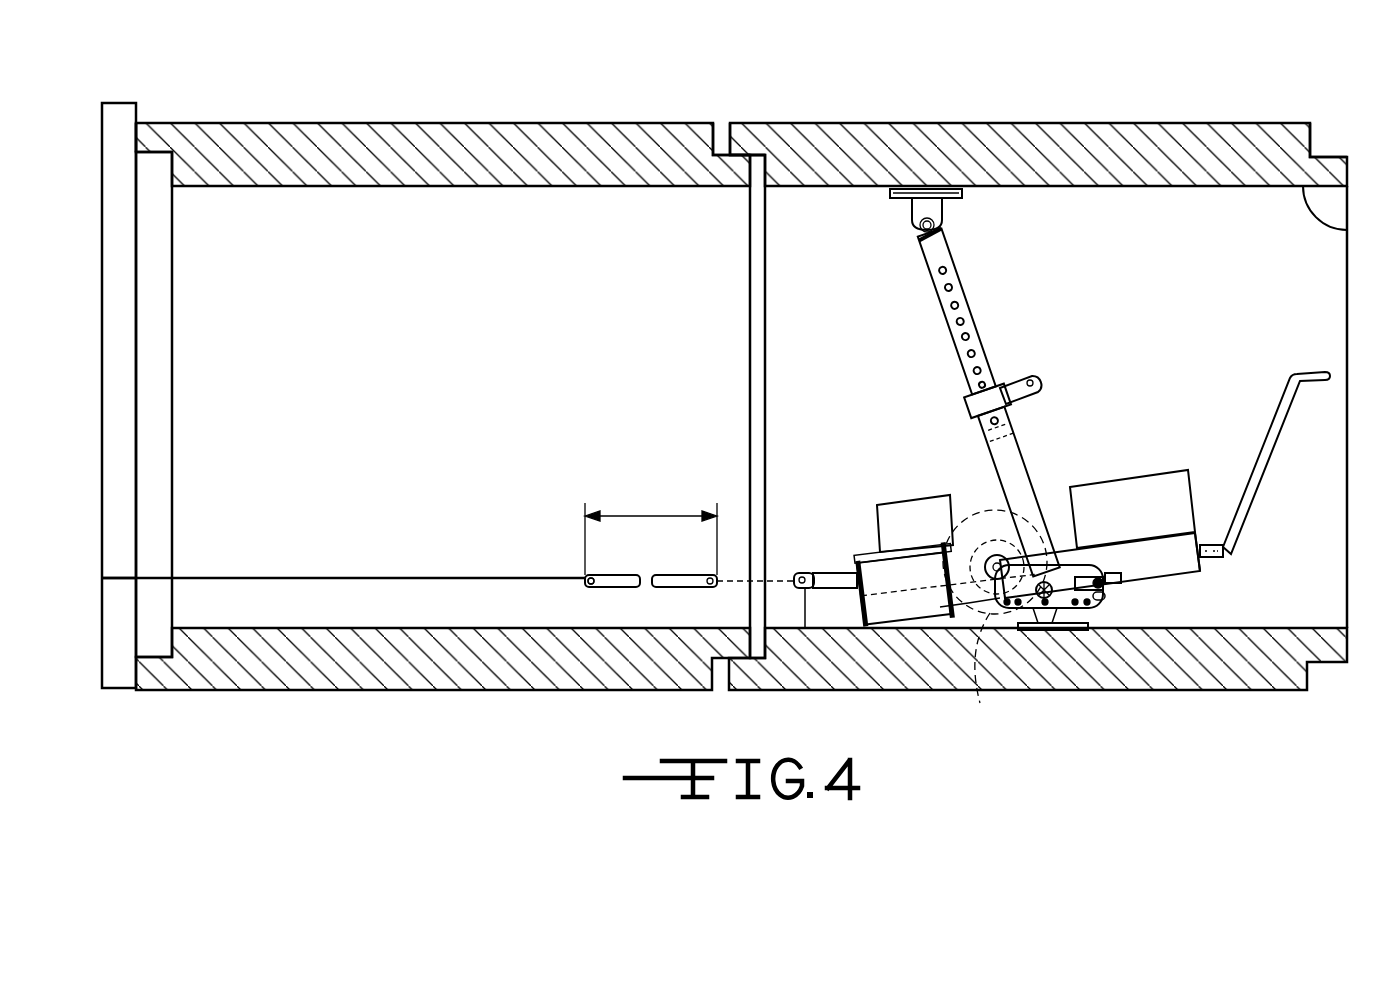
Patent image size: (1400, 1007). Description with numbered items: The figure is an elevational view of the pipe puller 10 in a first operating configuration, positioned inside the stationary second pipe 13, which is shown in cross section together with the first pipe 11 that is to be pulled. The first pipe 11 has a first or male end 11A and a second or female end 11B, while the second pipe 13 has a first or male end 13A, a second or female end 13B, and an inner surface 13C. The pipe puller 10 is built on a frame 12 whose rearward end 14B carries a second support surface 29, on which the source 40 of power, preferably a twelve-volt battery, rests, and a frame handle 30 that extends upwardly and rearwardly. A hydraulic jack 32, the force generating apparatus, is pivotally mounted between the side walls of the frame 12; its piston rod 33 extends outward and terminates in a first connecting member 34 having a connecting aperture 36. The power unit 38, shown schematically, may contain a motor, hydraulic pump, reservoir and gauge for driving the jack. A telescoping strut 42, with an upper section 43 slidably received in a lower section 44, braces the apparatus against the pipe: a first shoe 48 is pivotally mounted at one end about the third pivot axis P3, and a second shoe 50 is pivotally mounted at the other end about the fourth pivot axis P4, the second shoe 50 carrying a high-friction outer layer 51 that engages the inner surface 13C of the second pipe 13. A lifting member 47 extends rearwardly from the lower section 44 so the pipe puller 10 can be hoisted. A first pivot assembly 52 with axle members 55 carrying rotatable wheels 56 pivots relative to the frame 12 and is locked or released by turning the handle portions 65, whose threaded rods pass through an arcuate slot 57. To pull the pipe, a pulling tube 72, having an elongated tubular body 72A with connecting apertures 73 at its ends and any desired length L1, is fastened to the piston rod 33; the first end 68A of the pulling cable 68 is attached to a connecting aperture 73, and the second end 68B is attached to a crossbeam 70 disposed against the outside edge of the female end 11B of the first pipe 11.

The pipe puller 10 is at (1162, 315).
The first pipe 11 is at (560, 98).
The first or male end 11A is at (721, 123).
The second or female end 11B is at (146, 122).
The frame 12 is at (1175, 543).
The second pipe 13 is at (1029, 85).
The first or male end 13A is at (1332, 155).
The second or female end 13B is at (733, 123).
The inner surface 13C is at (1341, 235).
The rearward end 14B is at (1200, 560).
The second support surface 29 is at (1188, 533).
The frame handle 30 is at (1277, 448).
The hydraulic jack 32 is at (870, 570).
The piston rod 33 is at (833, 589).
The first connecting member 34 is at (812, 577).
The connecting aperture 36 is at (805, 630).
The power unit 38 is at (902, 500).
The source of power 40 is at (1090, 480).
The strut 42 is at (997, 300).
The upper section 43 is at (942, 252).
The lower section 44 is at (1000, 447).
The lifting member 47 is at (1034, 372).
The first shoe 48 is at (1085, 630).
The second shoe 50 is at (893, 198).
The outer layer 51 is at (898, 188).
The first pivot assembly 52 is at (1097, 578).
The axle members 55 is at (972, 533).
The rotatable wheels 56 is at (980, 703).
The arcuate slot 57 is at (1106, 597).
The handle portions 65 is at (1110, 572).
The pulling chain or cable 68 is at (432, 575).
The first end 68A is at (588, 576).
The second end 68B is at (125, 577).
The crossbeam 70 is at (103, 273).
The pulling tube 72 is at (649, 633).
The elongated tubular body 72A is at (628, 585).
The connecting apertures 73 is at (589, 584).
The length L1 is at (658, 503).
The third pivot axis P3 is at (1053, 612).
The fourth pivot axis P4 is at (917, 231).